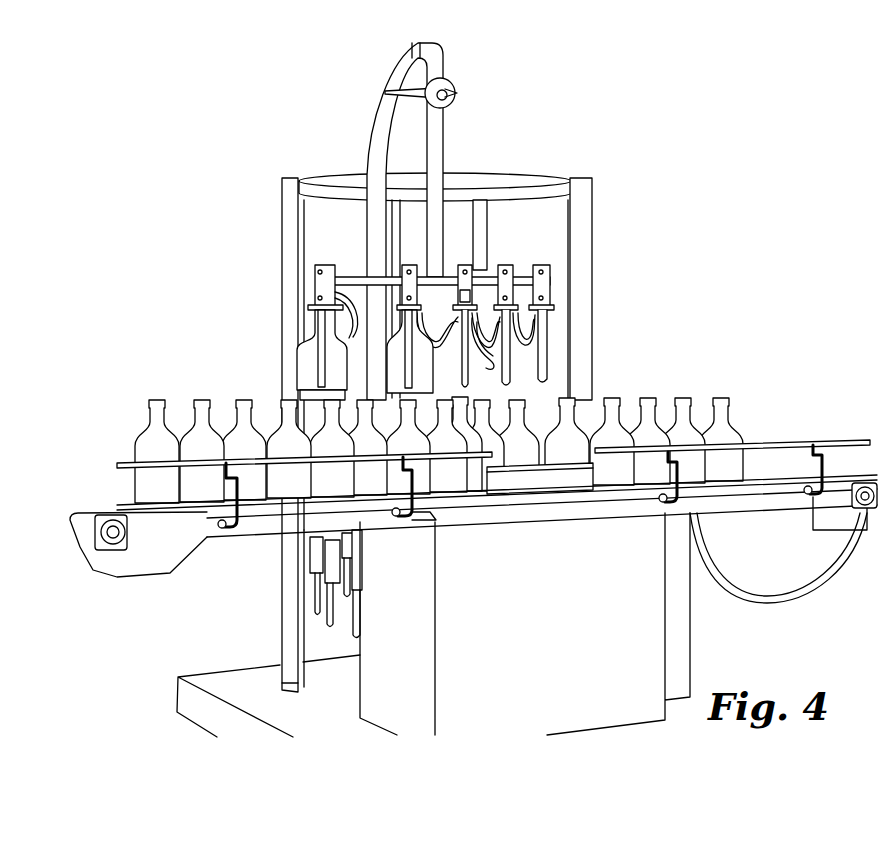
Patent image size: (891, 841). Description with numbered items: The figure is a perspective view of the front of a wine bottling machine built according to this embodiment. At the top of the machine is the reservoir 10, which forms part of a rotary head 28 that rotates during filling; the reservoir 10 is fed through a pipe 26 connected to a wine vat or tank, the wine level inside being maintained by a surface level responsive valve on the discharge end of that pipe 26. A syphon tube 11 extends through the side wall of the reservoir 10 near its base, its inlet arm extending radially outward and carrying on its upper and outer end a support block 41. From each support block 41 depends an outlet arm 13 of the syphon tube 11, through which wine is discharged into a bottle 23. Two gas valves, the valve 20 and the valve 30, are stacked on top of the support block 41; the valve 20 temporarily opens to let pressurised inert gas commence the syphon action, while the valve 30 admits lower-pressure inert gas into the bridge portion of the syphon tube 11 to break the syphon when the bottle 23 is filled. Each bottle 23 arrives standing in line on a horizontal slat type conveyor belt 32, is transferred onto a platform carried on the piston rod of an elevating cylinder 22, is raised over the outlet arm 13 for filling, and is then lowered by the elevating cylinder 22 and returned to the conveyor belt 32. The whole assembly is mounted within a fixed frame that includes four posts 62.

The reservoir 10 is at (380, 301).
The syphon tube 11 is at (489, 352).
The outlet arm 13 is at (542, 347).
The valve 20 is at (463, 268).
The elevating cylinder 22 is at (303, 392).
The bottle 23 is at (236, 406).
The pipe 26 is at (387, 80).
The rotary head 28 is at (305, 317).
The valve 30 is at (469, 266).
The conveyor belt 32 is at (80, 523).
The support block 41 is at (460, 294).
The post 62 is at (290, 218).